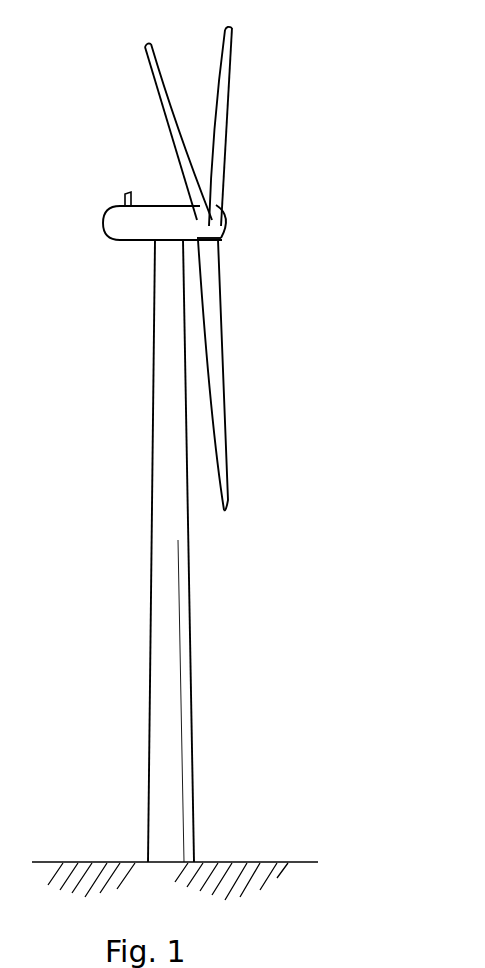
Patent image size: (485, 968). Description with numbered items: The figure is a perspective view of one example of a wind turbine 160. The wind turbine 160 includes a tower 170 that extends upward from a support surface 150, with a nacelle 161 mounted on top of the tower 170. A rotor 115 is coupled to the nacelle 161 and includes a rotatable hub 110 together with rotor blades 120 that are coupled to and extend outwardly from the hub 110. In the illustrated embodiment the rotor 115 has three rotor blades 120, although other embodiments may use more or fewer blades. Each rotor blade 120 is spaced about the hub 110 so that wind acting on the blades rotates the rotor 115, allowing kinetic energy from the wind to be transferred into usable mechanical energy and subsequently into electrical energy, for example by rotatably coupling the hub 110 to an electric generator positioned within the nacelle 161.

The wind turbine 160 is at (315, 90).
The rotor blade 120 is at (217, 61).
The hub 110 is at (222, 225).
The rotor 115 is at (231, 205).
The nacelle 161 is at (135, 248).
The tower 170 is at (156, 640).
The support surface 150 is at (95, 860).